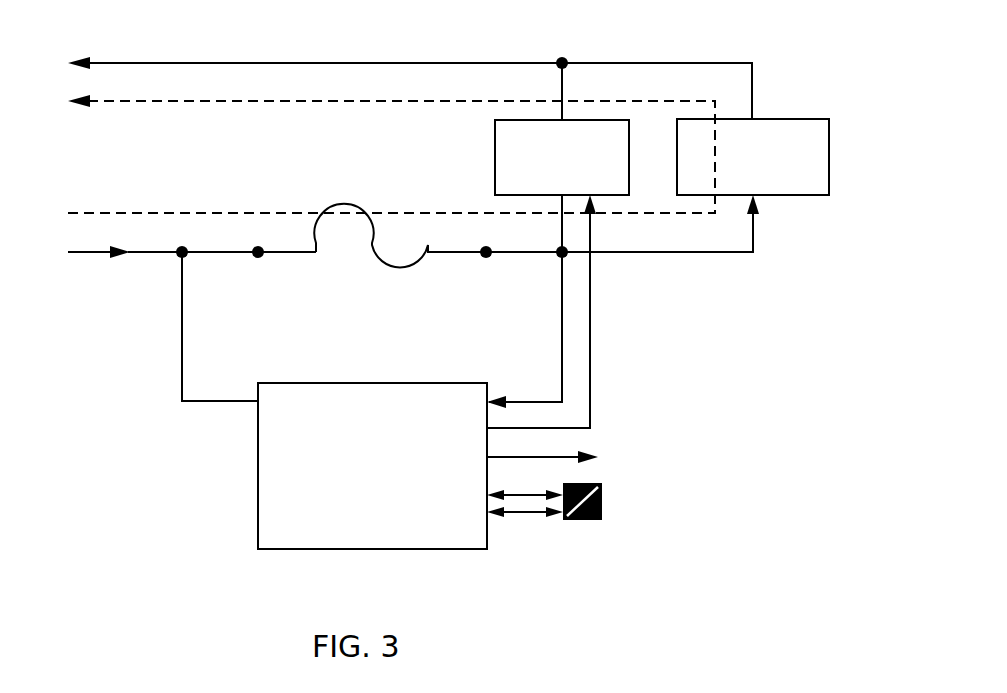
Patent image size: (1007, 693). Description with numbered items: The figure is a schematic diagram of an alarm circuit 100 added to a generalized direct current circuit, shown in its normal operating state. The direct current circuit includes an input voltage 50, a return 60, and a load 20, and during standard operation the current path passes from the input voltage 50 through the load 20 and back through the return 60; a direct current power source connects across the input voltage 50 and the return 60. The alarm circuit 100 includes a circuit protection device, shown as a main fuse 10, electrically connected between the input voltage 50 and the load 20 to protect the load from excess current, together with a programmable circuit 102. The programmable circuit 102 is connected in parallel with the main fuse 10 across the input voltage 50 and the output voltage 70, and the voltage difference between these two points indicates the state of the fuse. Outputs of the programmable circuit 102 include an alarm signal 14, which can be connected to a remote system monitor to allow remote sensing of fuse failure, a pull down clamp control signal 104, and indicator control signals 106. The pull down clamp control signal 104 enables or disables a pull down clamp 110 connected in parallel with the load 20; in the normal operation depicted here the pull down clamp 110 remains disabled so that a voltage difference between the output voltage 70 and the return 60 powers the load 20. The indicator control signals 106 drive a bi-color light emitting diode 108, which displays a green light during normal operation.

The return 60 is at (112, 63).
The input voltage 50 is at (95, 254).
The main fuse 10 is at (370, 250).
The output voltage 70 is at (555, 256).
The pull down clamp 110 is at (629, 158).
The load 20 is at (830, 176).
The programmable circuit 102 is at (372, 466).
The pull down clamp control signal 104 is at (592, 398).
The alarm signal 14 is at (593, 452).
The indicator control signals 106 is at (514, 516).
The bi-color light emitting diode 108 is at (580, 521).
The alarm circuit 100 is at (146, 510).